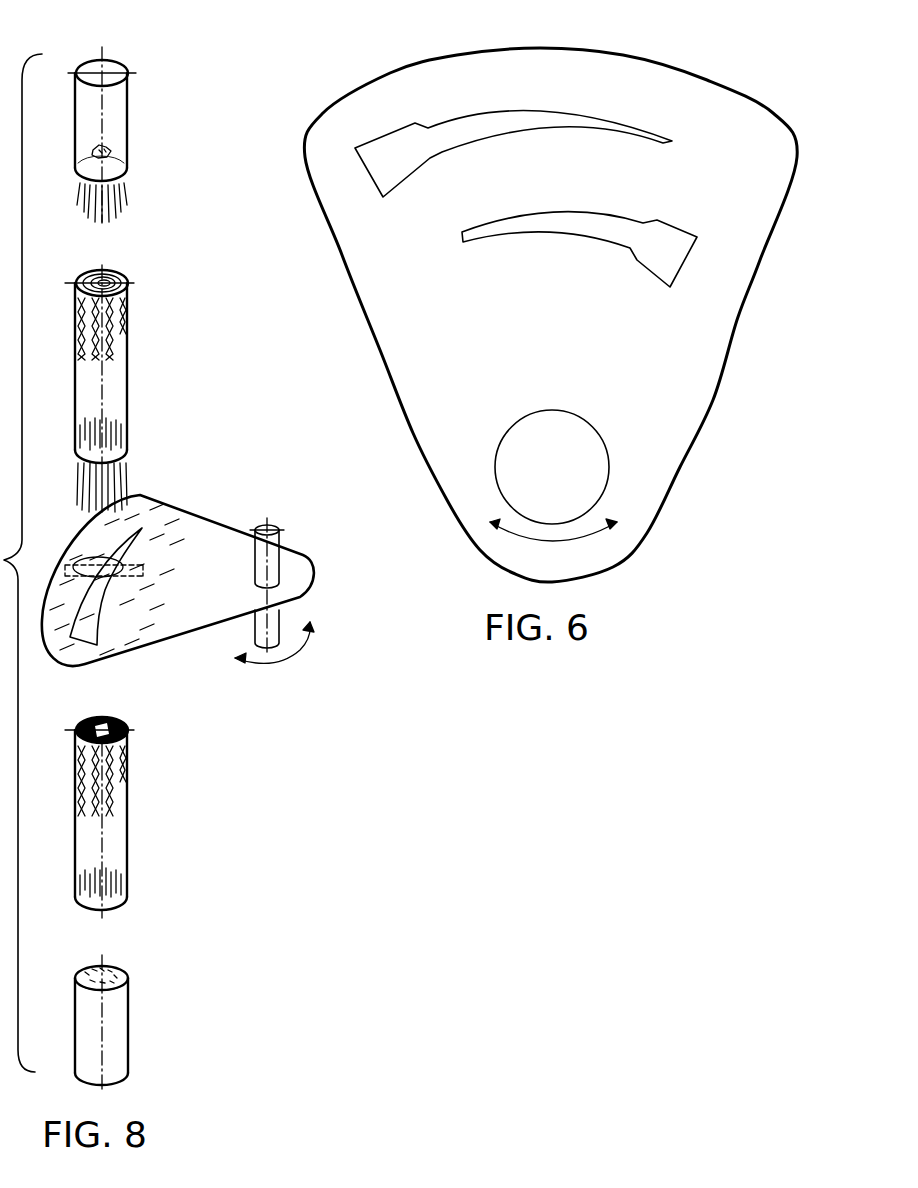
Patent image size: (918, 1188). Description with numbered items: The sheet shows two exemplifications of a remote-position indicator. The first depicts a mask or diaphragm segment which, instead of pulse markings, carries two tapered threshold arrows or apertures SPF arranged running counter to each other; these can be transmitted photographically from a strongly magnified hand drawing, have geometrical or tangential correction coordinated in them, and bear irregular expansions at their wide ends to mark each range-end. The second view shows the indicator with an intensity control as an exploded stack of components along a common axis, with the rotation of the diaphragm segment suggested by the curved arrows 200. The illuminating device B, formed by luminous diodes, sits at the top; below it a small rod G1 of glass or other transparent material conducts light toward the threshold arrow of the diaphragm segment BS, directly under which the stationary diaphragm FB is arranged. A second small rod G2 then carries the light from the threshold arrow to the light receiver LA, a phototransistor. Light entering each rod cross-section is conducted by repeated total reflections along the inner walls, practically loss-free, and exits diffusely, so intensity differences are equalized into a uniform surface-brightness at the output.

In FIG. 8, the illuminating device B is at (120, 142).
In FIG. 8, the small rod G1 is at (117, 390).
In FIG. 8, the diaphragm segment BS is at (187, 523).
In FIG. 8, the stationary diaphragm FB is at (63, 563).
In FIG. 8, the small rod G2 is at (115, 850).
In FIG. 8, the light receiver LA is at (115, 1047).
In FIG. 6, the direction of rotation 200 is at (597, 540).
In FIG. 8, the direction of rotation 200 is at (303, 660).
In FIG. 6, the threshold arrows SPF is at (583, 122).